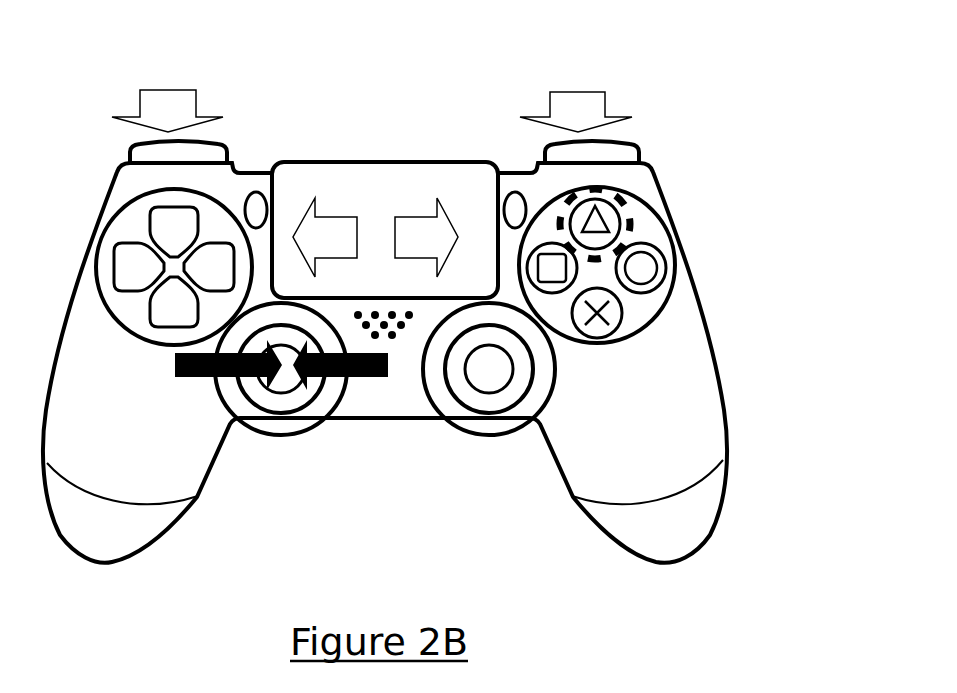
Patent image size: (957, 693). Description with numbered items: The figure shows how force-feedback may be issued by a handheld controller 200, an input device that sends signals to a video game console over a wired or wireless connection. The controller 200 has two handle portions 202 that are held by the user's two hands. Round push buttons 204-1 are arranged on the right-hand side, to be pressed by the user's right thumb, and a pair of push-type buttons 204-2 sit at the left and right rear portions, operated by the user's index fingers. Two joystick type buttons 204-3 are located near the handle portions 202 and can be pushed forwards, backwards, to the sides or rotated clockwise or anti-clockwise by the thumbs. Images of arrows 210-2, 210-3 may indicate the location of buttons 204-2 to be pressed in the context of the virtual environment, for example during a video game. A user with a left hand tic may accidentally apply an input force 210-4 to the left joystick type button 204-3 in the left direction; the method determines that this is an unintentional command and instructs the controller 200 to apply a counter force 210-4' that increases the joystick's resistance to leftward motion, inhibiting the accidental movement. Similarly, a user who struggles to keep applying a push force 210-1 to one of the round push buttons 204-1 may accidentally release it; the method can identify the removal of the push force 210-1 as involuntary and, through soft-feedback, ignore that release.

The handheld controller 200 is at (92, 84).
The handle portions 202 is at (710, 414).
The round push buttons 204-1 is at (643, 282).
The push-type buttons 204-2 is at (628, 162).
The joystick type buttons 204-3 is at (515, 387).
The push force 210-1 is at (623, 233).
The image of arrow 210-2 is at (607, 110).
The image of arrow 210-3 is at (412, 217).
The input force 210-4 is at (308, 411).
The counter force 210-4' is at (281, 430).